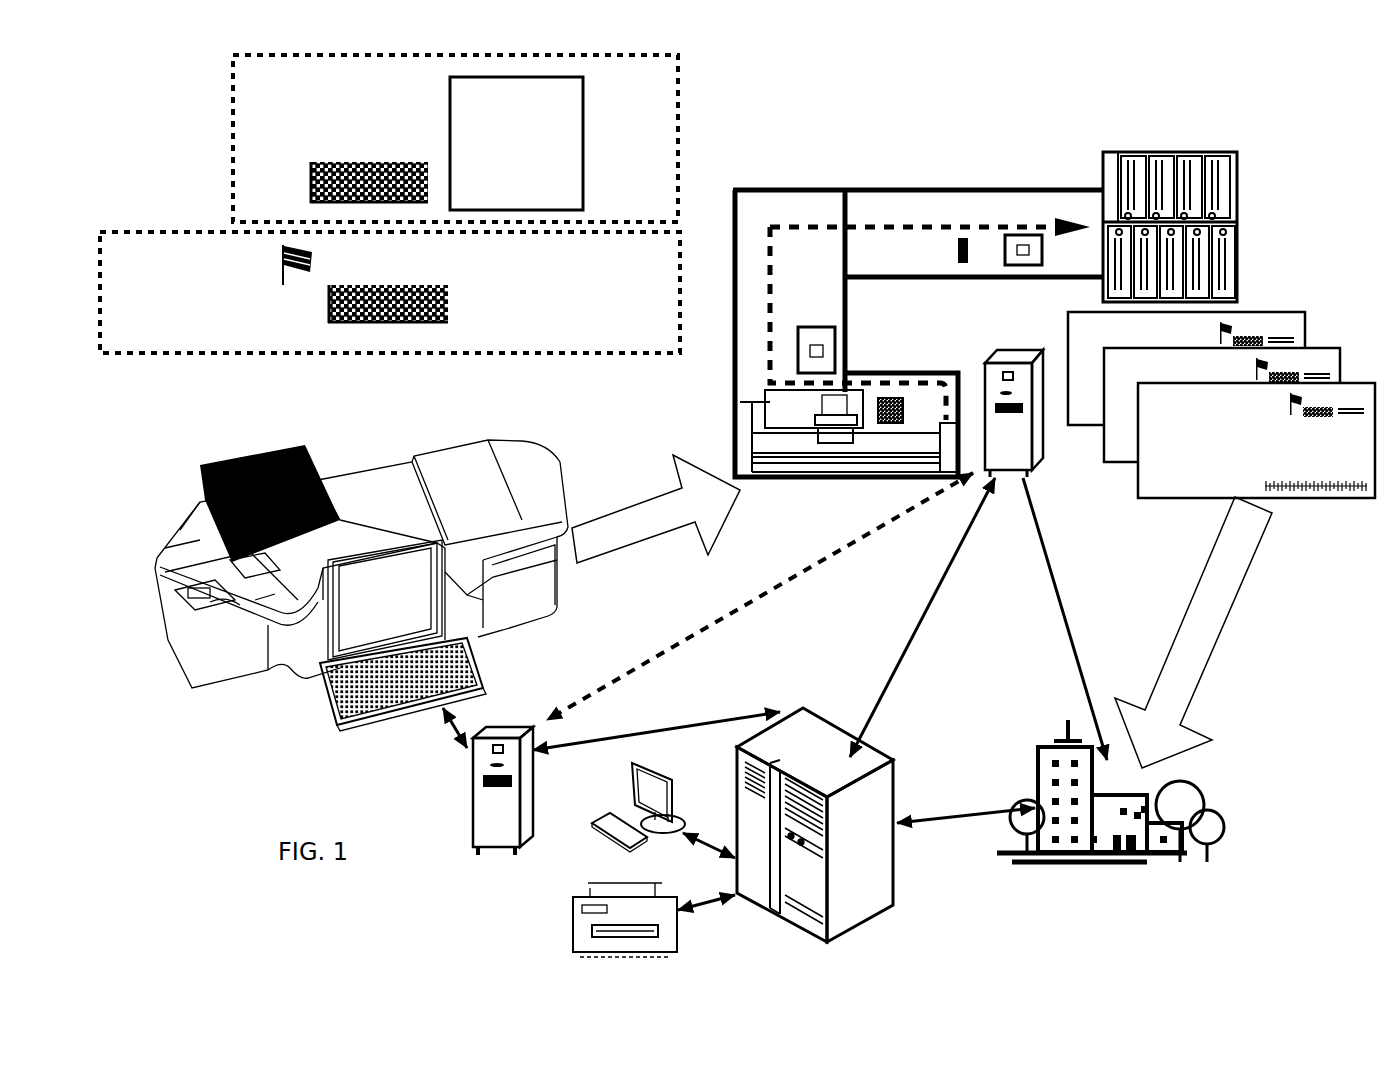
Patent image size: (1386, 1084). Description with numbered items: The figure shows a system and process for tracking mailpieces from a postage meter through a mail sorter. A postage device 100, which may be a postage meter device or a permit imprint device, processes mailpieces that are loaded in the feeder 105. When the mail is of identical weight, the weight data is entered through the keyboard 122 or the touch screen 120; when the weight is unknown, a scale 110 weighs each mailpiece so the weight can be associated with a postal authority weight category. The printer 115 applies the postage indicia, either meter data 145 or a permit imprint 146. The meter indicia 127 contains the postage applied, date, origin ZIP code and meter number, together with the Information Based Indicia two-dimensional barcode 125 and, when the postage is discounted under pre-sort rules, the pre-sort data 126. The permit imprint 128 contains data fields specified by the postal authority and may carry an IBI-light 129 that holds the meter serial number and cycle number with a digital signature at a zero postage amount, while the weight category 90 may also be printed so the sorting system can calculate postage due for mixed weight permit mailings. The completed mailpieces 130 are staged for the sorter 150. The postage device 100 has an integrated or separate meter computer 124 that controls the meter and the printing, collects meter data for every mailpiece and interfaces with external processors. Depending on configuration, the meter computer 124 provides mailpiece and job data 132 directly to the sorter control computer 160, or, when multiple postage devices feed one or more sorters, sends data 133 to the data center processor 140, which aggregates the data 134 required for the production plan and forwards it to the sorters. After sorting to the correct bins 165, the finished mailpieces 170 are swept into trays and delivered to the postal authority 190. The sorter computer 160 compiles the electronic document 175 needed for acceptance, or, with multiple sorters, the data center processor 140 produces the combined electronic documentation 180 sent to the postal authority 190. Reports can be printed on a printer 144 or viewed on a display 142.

The weight category 90 is at (275, 168).
The postage device 100 is at (345, 440).
The feeder 105 is at (232, 590).
The scale 110 is at (368, 480).
The printer 115 is at (493, 465).
The touch screen 120 is at (372, 590).
The keyboard 122 is at (350, 692).
The meter computer 124 is at (470, 775).
The Information Based Indicia 2-D barcode 125 is at (328, 322).
The pre-sort discount data 126 is at (148, 311).
The meter indicia 127 is at (575, 310).
The permit imprint 128 is at (578, 170).
The IBI-light 129 is at (335, 157).
The completed mailpieces 130 is at (656, 509).
The mailpiece and job data 132 is at (760, 596).
The data from multiple postage meters 133 is at (656, 731).
The production plan data 134 is at (922, 617).
The data center processor 140 is at (808, 705).
The display 142 is at (640, 805).
The printer 144 is at (573, 910).
The meter data indicia 145 is at (200, 222).
The permit imprint indicia 146 is at (231, 147).
The sorter 150 is at (910, 178).
The sorter control computer 160 is at (1008, 342).
The bins 165 is at (1100, 152).
The finished mailpieces 170 is at (1252, 300).
The electronic document 175 is at (1084, 619).
The combined electronic documentation 180 is at (966, 815).
The postal authority 190 is at (1192, 815).